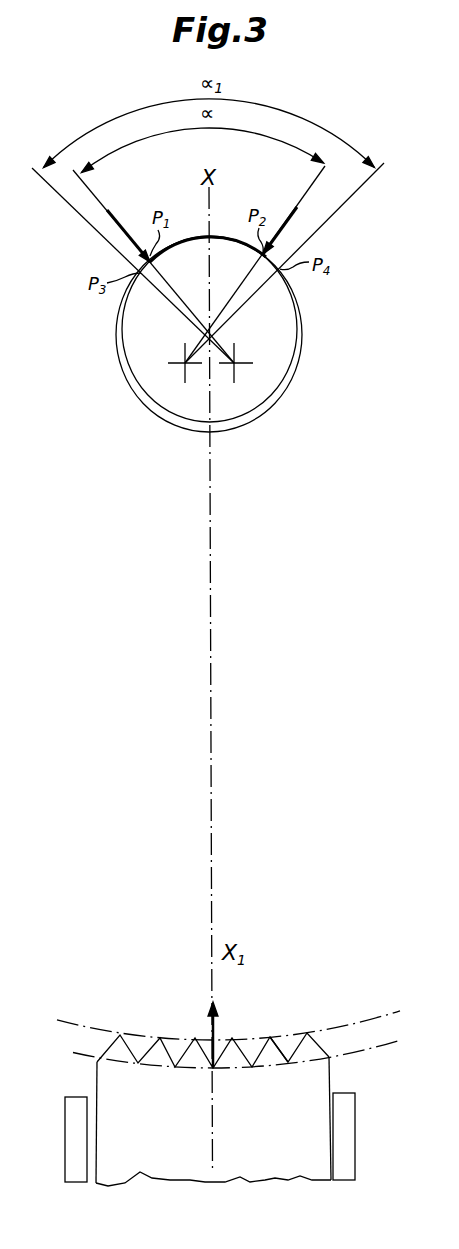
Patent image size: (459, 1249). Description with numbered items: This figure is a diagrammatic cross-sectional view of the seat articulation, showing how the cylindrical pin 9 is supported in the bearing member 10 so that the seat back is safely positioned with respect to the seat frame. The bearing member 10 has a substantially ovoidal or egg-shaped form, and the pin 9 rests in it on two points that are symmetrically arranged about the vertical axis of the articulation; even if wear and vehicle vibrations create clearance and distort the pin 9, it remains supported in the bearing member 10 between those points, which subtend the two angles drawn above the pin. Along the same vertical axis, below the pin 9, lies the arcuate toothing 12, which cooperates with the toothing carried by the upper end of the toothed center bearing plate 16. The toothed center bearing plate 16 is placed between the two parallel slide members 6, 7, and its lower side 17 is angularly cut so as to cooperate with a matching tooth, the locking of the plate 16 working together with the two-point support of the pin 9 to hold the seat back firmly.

The slide member 6 is at (72, 1113).
The slide member 7 is at (343, 1125).
The pin 9 is at (277, 320).
The bearing member 10 is at (297, 388).
The toothing 12 is at (262, 1030).
The toothed center bearing plate 16 is at (313, 1093).
The lower side 17 is at (268, 1053).